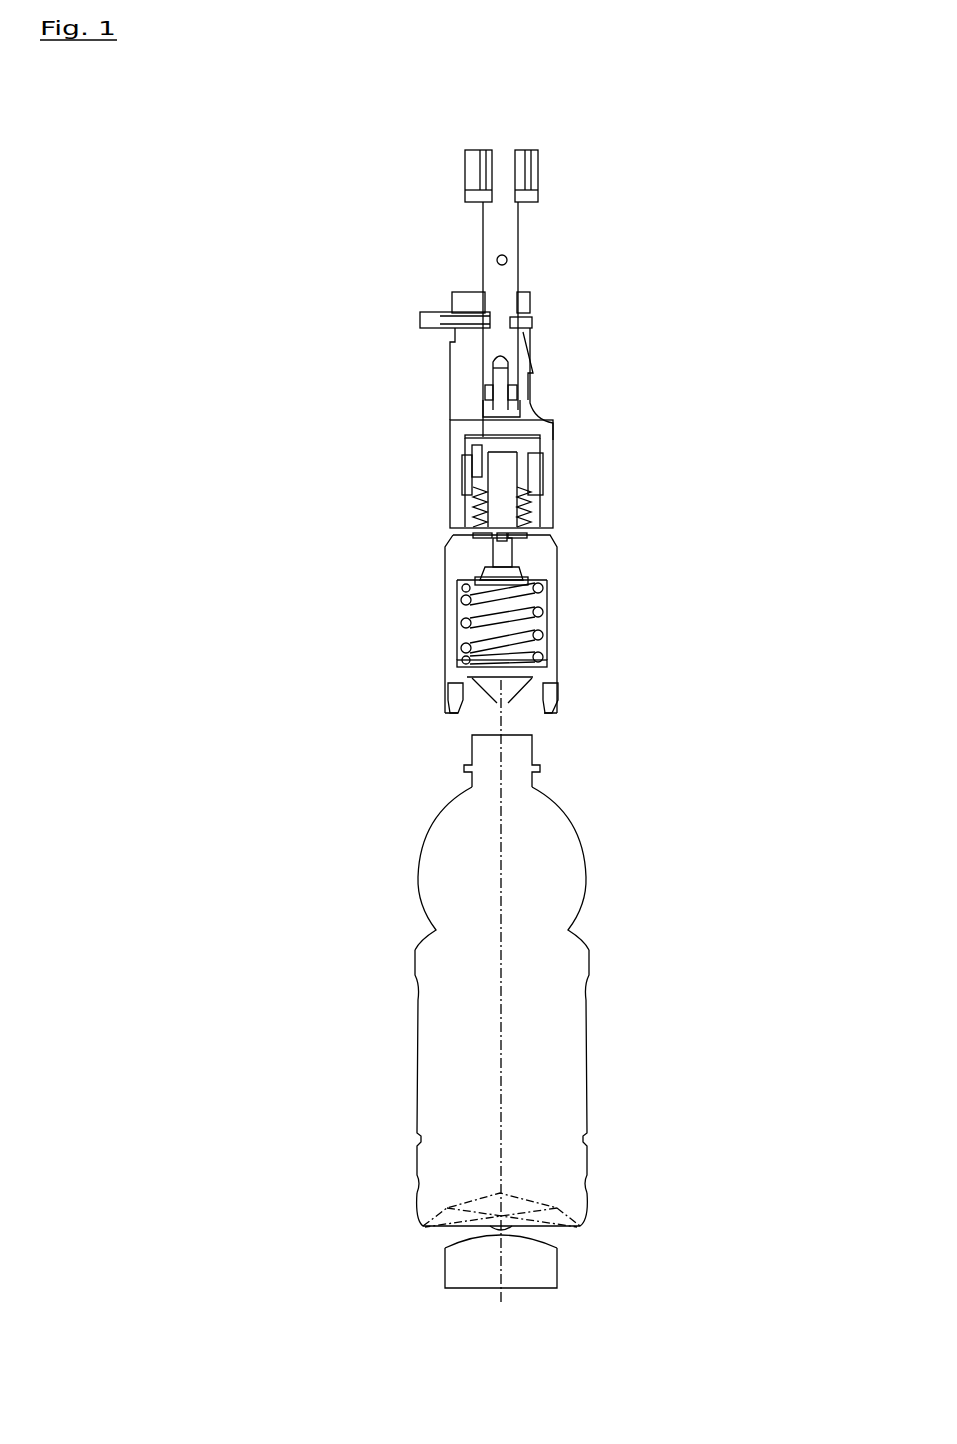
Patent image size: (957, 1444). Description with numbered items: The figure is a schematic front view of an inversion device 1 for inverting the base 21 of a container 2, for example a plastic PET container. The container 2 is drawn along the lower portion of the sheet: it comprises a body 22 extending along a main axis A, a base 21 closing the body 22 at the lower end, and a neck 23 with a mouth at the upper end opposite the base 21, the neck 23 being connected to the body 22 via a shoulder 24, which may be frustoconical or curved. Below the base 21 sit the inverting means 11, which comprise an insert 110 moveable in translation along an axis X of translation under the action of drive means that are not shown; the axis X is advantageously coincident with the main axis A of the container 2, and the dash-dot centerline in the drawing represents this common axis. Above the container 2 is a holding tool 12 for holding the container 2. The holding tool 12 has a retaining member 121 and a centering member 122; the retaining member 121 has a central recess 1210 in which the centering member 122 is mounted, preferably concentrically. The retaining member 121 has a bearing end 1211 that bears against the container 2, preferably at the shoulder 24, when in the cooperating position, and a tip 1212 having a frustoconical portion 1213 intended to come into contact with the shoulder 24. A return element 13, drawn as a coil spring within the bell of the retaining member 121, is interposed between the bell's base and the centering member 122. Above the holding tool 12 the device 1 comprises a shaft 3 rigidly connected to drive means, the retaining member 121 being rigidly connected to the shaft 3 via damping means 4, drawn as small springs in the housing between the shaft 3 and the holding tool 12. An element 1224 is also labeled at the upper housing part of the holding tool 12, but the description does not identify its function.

The inversion device 1 is at (712, 443).
The container 2 is at (722, 1018).
The shaft 3 is at (567, 398).
The damping means 4 is at (527, 508).
The inverting means 11 is at (413, 1275).
The insert 110 is at (543, 1263).
The holding tool 12 is at (430, 578).
The retaining member 121 is at (558, 553).
The central recess 1210 is at (535, 627).
The bearing end 1211 is at (430, 698).
The tip 1212 is at (552, 695).
The frustoconical portion 1213 is at (457, 713).
The centering member 122 is at (545, 668).
The upper housing part 1224 is at (450, 543).
The return element 13 is at (470, 627).
The base 21 is at (403, 1213).
The body 22 is at (595, 1082).
The neck 23 is at (452, 772).
The shoulder 24 is at (563, 800).
The main axis A is at (500, 1020).
The axis of translation X is at (500, 700).